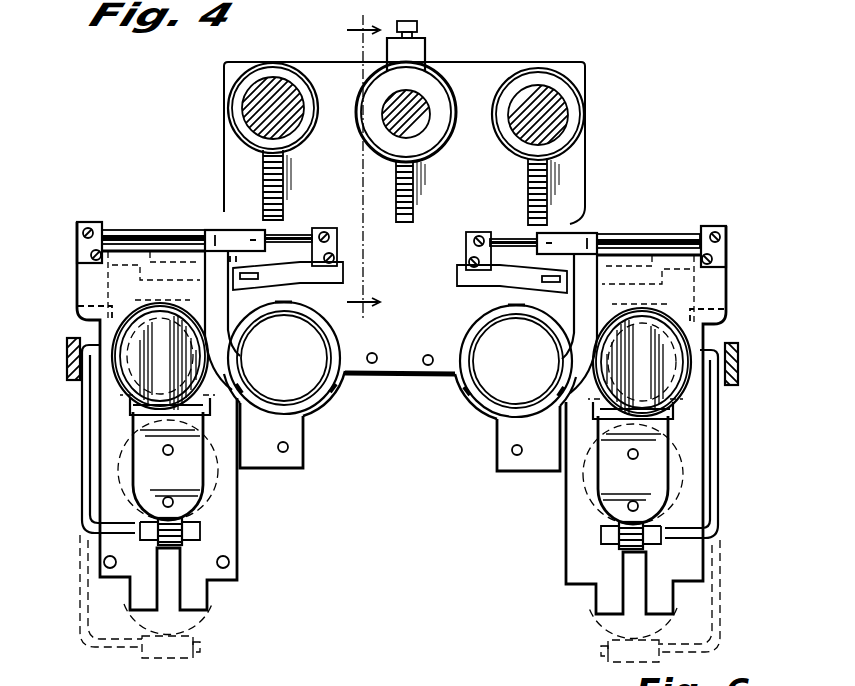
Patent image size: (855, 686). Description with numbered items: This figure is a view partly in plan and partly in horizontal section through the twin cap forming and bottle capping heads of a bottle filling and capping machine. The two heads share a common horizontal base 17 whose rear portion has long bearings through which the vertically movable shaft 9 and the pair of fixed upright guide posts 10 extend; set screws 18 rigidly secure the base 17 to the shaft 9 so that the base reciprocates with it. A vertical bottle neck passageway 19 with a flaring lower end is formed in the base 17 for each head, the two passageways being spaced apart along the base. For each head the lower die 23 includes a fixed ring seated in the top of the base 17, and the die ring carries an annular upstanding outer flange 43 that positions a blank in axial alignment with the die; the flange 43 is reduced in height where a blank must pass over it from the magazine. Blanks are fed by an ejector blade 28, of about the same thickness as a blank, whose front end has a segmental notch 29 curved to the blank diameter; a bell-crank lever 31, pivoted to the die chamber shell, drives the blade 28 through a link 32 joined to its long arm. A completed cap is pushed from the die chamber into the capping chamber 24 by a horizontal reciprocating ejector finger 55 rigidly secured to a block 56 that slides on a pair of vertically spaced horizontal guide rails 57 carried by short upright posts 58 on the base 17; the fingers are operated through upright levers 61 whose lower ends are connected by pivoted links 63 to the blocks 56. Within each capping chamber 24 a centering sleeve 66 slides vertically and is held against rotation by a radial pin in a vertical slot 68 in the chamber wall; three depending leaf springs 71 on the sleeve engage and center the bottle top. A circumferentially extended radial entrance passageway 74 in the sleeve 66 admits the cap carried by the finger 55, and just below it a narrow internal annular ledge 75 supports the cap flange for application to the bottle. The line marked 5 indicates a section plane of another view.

The section line 5 is at (363, 167).
The vertically movable shaft 9 is at (390, 128).
The fixed upright guide posts 10 is at (262, 112).
The base 17 is at (326, 248).
The set screws 18 is at (417, 26).
The bottle neck passageway 19 is at (150, 362).
The lower die 23 is at (135, 395).
The capping chamber 24 is at (282, 396).
The ejector blade 28 is at (600, 640).
The segmental notch 29 is at (135, 411).
The bell-crank lever 31 is at (67, 362).
The link 32 is at (82, 460).
The outer flange 43 is at (108, 338).
The ejector finger 55 is at (78, 306).
The block 56 is at (190, 233).
The guide rails 57 is at (135, 235).
The upright posts 58 is at (328, 228).
The upright levers 61 is at (352, 240).
The pivoted links 63 is at (112, 284).
The centering sleeve 66 is at (346, 348).
The vertical slot 68 is at (358, 378).
The leaf springs 71 is at (270, 306).
The entrance passageway 74 is at (235, 356).
The internal annular ledge 75 is at (318, 418).